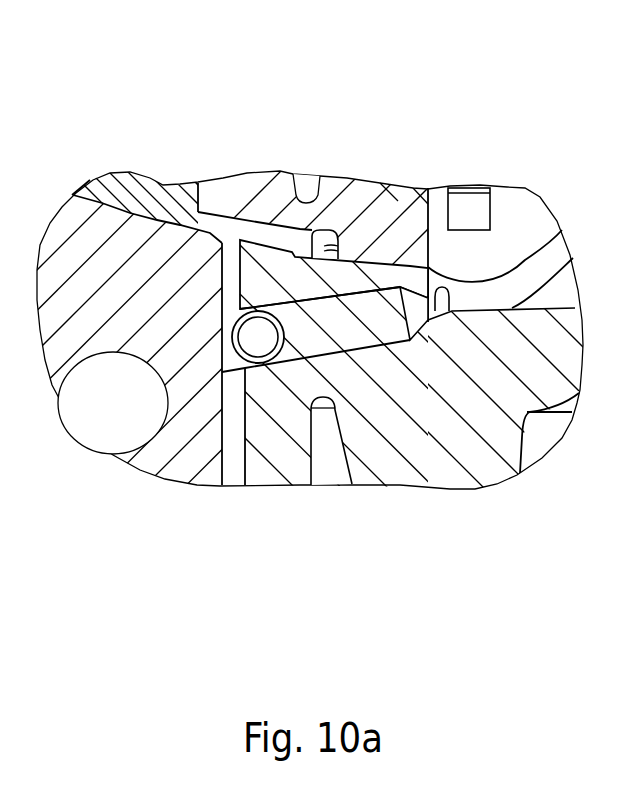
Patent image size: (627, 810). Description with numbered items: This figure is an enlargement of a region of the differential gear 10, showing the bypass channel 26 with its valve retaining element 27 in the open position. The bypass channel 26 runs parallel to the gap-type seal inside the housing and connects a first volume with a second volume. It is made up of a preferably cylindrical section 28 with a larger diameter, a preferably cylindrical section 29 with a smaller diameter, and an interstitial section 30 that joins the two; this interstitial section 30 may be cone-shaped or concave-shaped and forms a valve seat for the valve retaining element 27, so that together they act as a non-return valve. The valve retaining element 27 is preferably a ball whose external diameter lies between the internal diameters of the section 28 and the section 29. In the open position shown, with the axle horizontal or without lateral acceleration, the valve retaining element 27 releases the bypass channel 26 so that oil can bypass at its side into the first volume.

The housing 10 is at (503, 227).
The bypass channel 26 is at (326, 325).
The valve retaining element 27 is at (258, 337).
The cylindrical section with a larger diameter 28 is at (352, 302).
The cylindrical section with a smaller diameter 29 is at (450, 296).
The interstitial section 30 is at (414, 338).